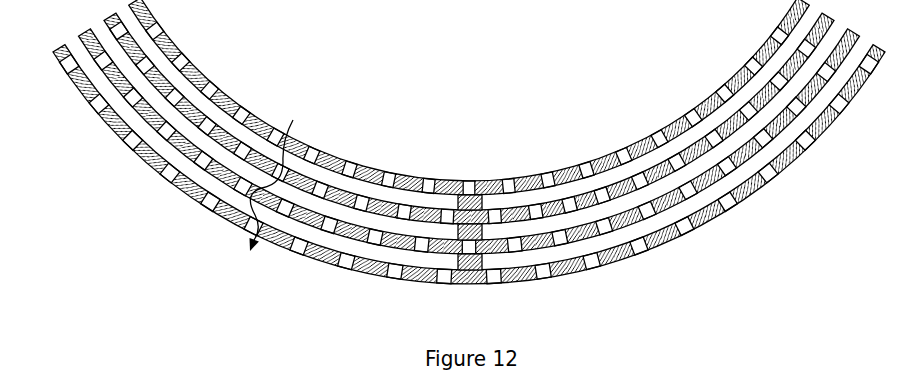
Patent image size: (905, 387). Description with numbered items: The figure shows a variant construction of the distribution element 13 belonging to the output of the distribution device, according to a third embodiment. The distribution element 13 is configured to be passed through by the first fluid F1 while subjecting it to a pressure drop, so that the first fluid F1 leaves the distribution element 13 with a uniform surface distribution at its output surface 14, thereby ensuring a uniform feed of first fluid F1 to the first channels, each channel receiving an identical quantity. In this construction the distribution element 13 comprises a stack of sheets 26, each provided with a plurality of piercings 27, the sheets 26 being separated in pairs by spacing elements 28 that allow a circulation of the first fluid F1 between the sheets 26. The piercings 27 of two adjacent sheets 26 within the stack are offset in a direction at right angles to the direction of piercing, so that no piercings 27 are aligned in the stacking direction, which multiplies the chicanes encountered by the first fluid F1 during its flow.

The distribution element 13 is at (469, 181).
The output surface 14 is at (665, 250).
The sheets 26 is at (514, 218).
The piercings 27 is at (658, 138).
The spacing elements 28 is at (467, 211).
The first fluid F1 is at (284, 174).